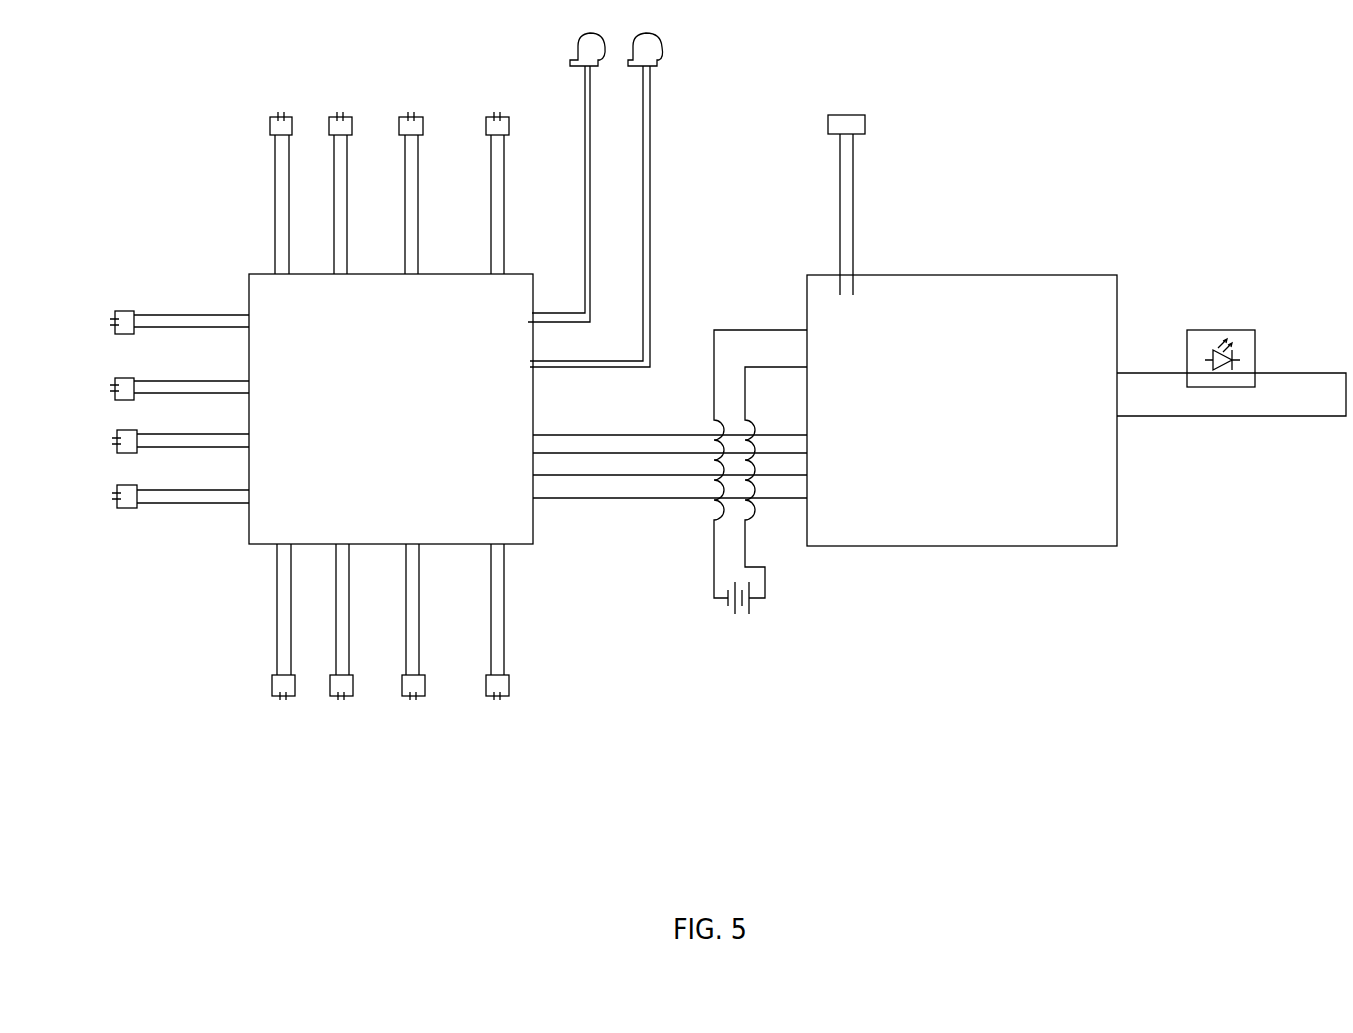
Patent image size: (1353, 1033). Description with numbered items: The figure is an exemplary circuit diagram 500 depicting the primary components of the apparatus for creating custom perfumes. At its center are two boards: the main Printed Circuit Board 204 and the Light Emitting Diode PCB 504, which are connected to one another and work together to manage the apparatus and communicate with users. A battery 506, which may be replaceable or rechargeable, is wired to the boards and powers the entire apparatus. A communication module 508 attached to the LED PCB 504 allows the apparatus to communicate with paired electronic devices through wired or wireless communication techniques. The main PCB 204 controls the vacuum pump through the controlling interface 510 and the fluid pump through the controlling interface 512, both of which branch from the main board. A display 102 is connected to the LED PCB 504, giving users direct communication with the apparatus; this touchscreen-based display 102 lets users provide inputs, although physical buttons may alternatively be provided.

The display 102 is at (1240, 340).
The main Printed Circuit Board 204 is at (321, 406).
The circuit diagram 500 is at (1155, 836).
The Light Emitting Diode PCB 504 is at (962, 410).
The battery 506 is at (765, 608).
The communication module 508 is at (866, 130).
The controlling interface 510 is at (660, 50).
The controlling interface 512 is at (578, 50).